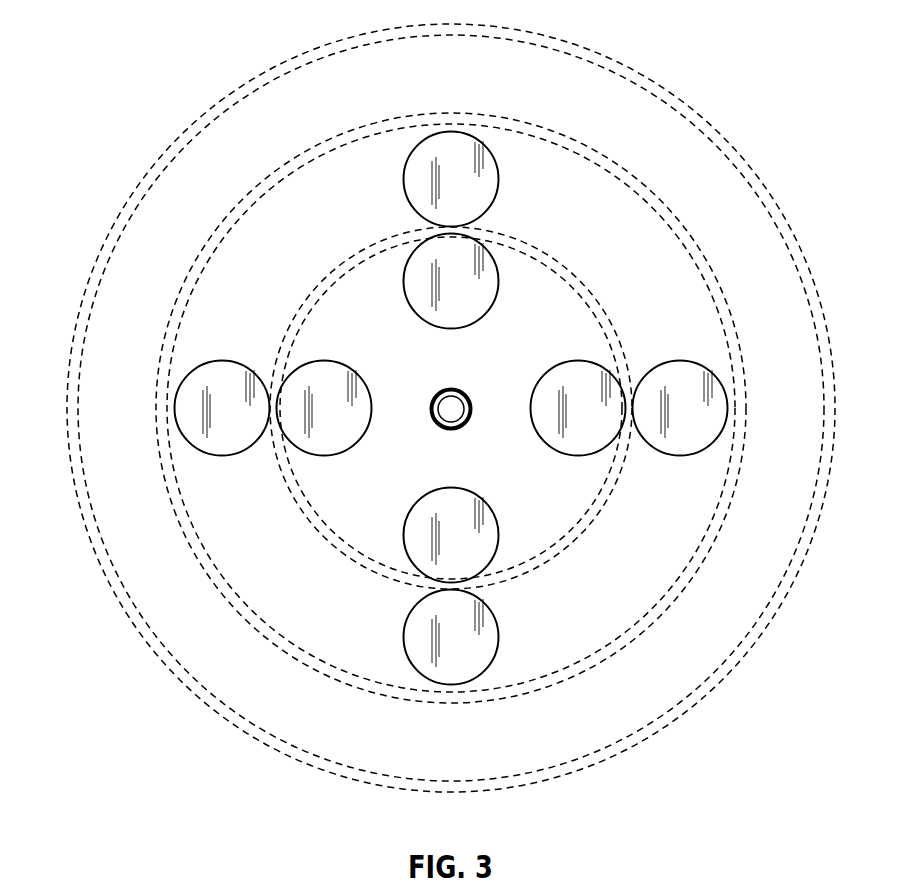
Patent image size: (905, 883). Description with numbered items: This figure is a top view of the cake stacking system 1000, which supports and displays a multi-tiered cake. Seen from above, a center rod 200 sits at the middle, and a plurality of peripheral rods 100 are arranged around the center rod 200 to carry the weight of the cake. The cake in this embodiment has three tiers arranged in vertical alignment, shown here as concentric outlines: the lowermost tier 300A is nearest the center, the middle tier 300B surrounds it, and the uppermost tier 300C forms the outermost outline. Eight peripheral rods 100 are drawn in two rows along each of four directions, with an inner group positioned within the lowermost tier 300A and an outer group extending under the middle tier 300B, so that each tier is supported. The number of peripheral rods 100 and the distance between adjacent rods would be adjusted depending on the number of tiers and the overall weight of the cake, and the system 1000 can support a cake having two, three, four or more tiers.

The cake stacking system 1000 is at (126, 114).
The peripheral rods 100 is at (450, 175).
The center rod 200 is at (467, 393).
The lowermost tier 300A is at (533, 280).
The middle tier 300B is at (570, 175).
The uppermost tier 300C is at (572, 88).